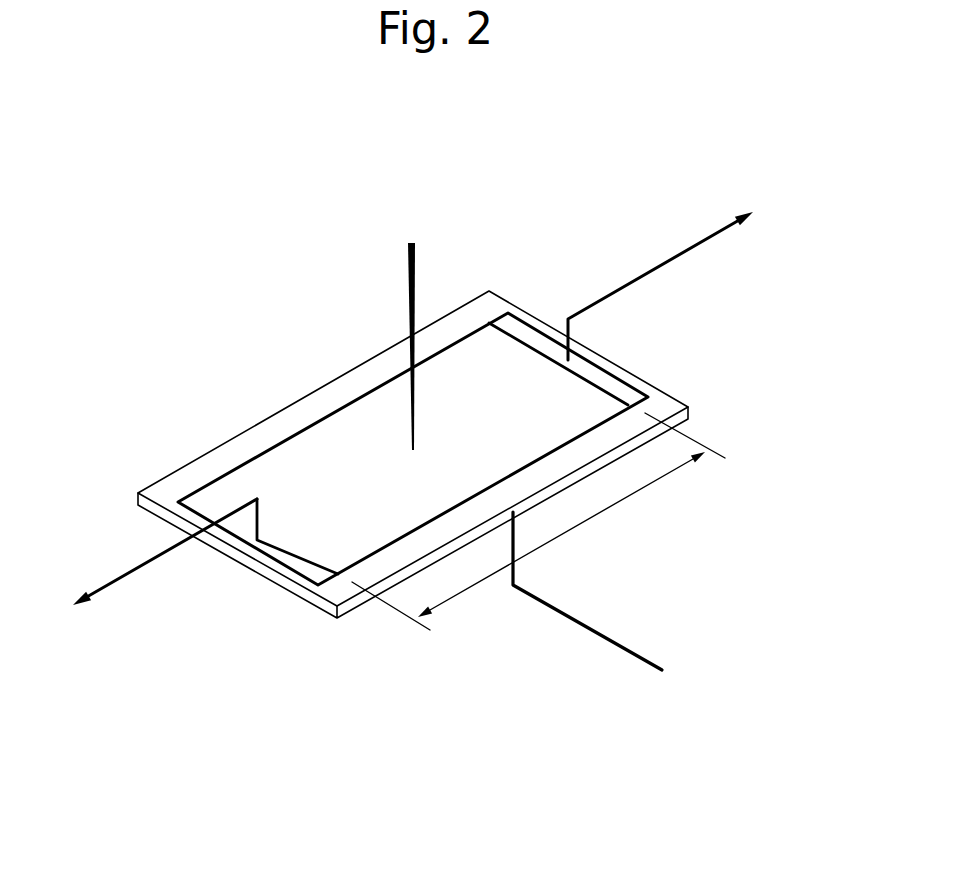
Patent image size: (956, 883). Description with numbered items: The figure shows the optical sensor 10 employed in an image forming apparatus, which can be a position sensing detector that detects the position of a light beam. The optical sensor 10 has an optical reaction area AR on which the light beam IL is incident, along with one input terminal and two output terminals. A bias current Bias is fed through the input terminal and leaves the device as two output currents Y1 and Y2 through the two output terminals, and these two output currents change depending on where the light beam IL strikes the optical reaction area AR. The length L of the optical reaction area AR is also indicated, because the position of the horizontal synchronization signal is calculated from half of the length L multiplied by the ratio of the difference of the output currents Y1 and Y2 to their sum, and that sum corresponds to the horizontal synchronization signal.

The optical sensor 10 is at (232, 230).
The optical reaction area AR is at (288, 467).
The light beam IL is at (412, 323).
The output current Y1 is at (205, 564).
The output current Y2 is at (627, 308).
The length of the optical reaction area L is at (538, 521).
The bias current Bias is at (685, 685).